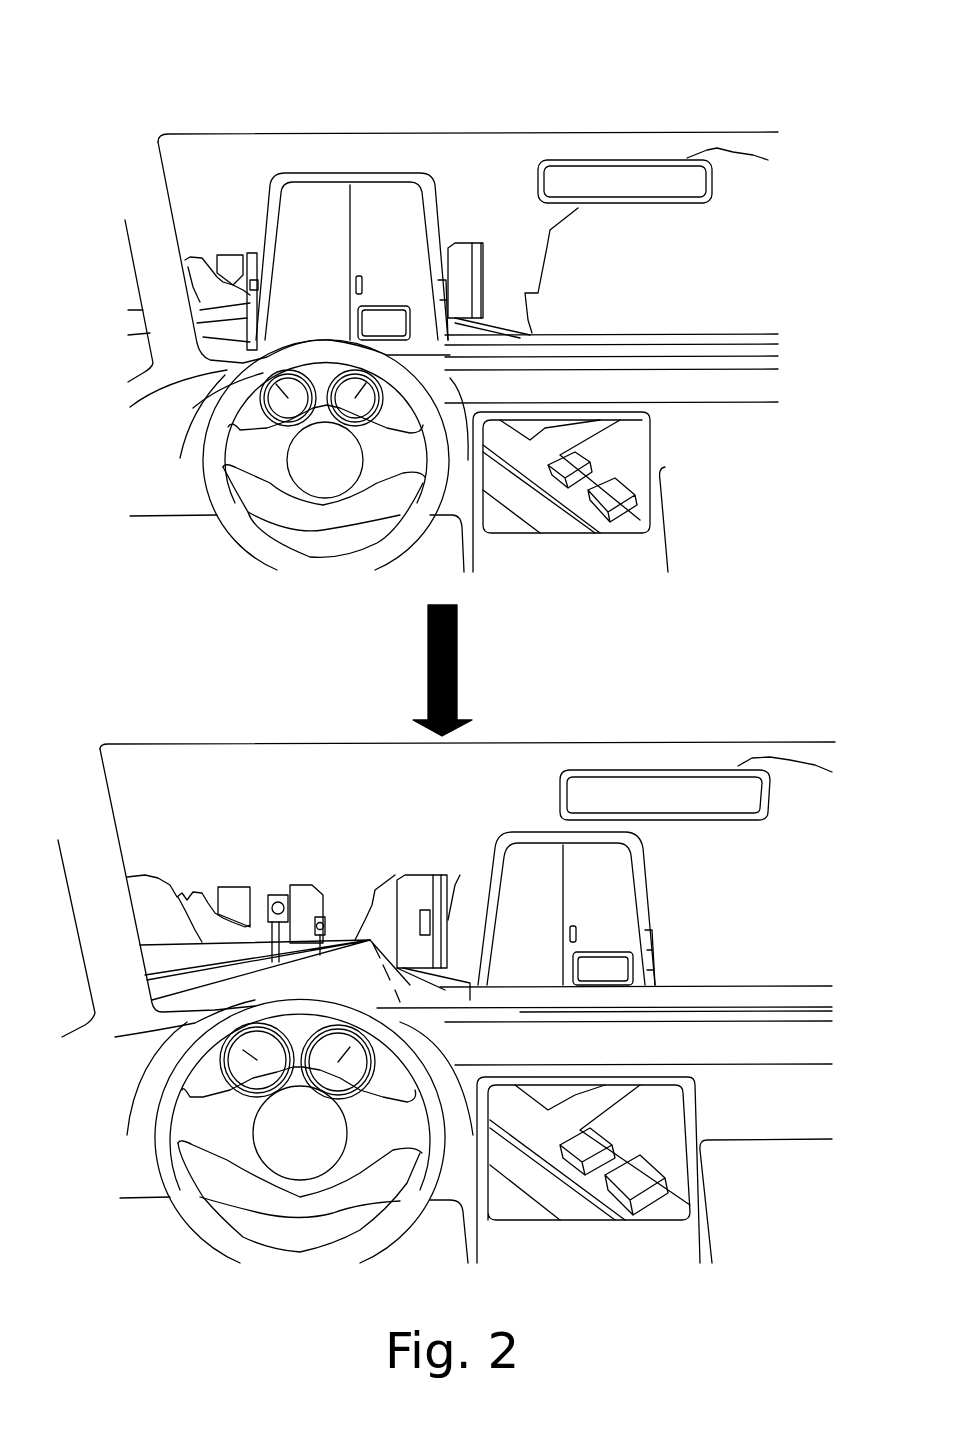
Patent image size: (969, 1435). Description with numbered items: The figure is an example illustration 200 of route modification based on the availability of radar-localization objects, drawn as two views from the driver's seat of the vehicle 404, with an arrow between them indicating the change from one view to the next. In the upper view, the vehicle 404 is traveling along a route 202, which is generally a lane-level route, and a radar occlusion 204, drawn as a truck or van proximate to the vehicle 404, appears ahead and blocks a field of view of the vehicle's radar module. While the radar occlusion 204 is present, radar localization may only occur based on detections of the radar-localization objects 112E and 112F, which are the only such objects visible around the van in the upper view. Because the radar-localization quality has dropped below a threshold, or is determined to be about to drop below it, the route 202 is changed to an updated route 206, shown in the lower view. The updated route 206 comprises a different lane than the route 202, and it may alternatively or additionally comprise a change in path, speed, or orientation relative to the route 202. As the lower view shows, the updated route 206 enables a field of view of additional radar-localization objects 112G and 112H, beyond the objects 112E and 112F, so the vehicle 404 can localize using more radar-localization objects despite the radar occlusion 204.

The example illustration 200 is at (786, 32).
The route 202 is at (162, 104).
The updated route 206 is at (162, 721).
The radar occlusion 204 is at (310, 282).
The radar-localization object 112E is at (460, 262).
The radar-localization object 112F is at (232, 267).
The radar-localization object 112G is at (280, 905).
The radar-localization object 112H is at (300, 902).
The vehicle 404 is at (605, 383).